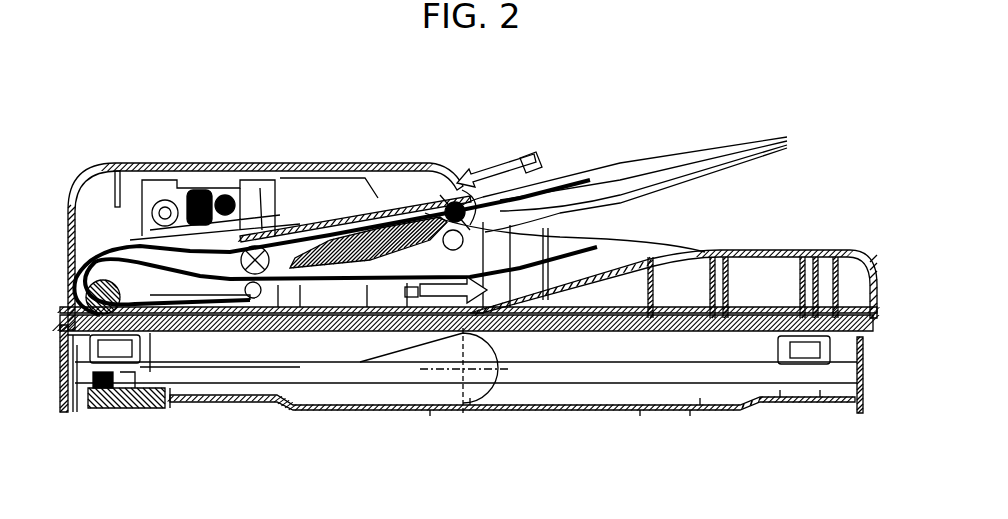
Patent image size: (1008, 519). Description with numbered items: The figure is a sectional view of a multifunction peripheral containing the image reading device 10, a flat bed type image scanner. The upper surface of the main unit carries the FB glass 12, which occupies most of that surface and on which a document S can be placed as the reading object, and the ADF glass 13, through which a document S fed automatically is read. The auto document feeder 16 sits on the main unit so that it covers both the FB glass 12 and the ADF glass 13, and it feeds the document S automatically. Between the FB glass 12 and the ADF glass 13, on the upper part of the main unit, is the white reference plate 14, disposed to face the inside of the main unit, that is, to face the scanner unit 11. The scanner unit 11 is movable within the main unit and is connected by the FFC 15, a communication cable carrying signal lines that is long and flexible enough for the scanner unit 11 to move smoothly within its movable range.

The image reading device 10 is at (445, 135).
The auto document feeder (ADF) 16 is at (314, 163).
The document S is at (570, 176).
The scanner unit 11 is at (81, 362).
The FB glass 12 is at (628, 342).
The ADF glass 13 is at (152, 340).
The white reference plate 14 is at (190, 333).
The FFC 15 is at (497, 393).